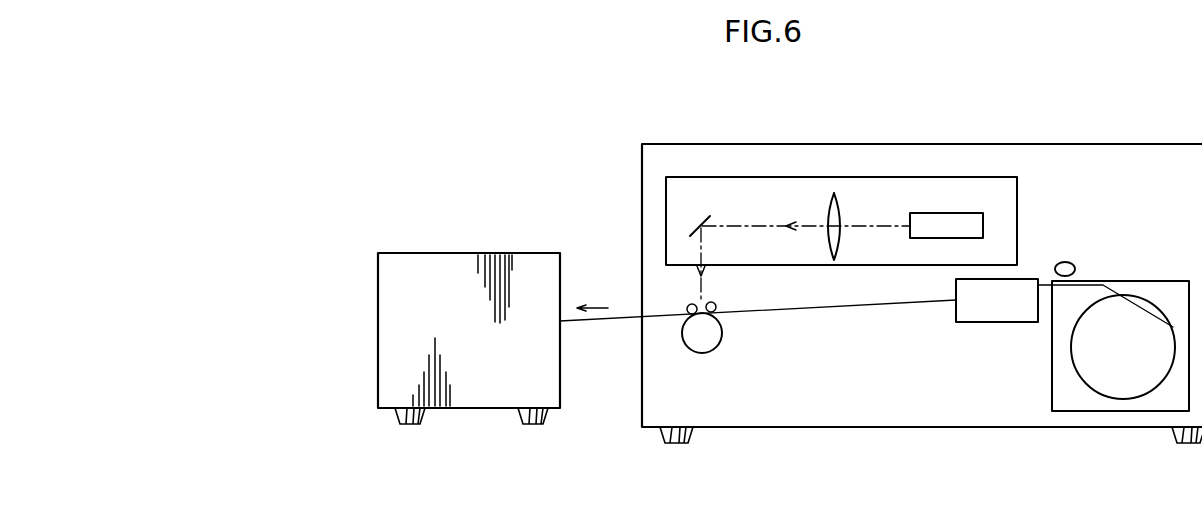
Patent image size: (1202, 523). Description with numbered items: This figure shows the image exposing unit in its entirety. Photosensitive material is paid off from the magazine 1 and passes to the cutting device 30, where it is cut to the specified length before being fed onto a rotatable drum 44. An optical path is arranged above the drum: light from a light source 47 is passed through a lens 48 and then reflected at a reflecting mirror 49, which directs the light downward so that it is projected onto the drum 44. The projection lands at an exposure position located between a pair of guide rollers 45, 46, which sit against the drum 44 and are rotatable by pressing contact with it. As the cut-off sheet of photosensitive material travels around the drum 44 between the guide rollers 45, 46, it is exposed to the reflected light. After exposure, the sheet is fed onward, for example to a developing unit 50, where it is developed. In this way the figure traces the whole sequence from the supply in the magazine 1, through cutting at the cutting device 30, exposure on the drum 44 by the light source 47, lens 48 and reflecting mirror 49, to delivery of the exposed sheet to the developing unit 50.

The magazine 1 is at (1168, 290).
The cutting device 30 is at (1003, 316).
The rotatable drum 44 is at (718, 344).
The guide roller 45 is at (688, 305).
The guide roller 46 is at (716, 305).
The light source 47 is at (983, 220).
The lens 48 is at (843, 200).
The reflecting mirror 49 is at (704, 218).
The developing unit 50 is at (472, 262).